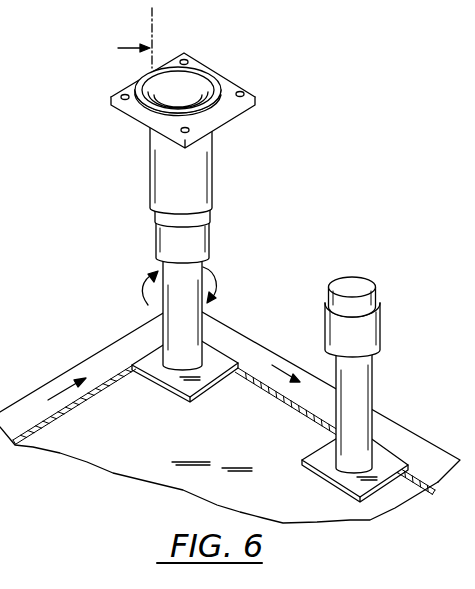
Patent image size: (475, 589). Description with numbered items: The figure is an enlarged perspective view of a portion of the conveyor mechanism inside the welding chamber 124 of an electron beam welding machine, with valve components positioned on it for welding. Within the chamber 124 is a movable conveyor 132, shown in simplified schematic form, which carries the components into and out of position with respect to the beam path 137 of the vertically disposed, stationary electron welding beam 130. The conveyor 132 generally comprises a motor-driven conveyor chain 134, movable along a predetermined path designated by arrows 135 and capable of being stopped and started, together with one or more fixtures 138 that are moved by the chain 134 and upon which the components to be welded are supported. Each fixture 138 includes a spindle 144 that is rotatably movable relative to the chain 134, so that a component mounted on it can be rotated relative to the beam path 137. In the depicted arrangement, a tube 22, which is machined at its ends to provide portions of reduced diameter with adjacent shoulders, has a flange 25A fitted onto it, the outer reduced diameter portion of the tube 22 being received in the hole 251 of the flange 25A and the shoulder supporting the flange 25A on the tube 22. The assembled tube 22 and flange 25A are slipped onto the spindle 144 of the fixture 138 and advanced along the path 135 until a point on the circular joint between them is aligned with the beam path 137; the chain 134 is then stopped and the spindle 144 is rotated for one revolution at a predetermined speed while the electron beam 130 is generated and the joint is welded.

The electron welding beam 130 is at (150, 16).
The beam path 137 is at (116, 50).
The hole 251 is at (187, 98).
The flange 25A is at (237, 80).
The tube 22 is at (207, 190).
The welding chamber 124 is at (100, 253).
The spindle 144 is at (202, 267).
The fixture 138 is at (206, 321).
The arrows 135 is at (63, 392).
The conveyor 132 is at (109, 372).
The conveyor chain 134 is at (70, 410).